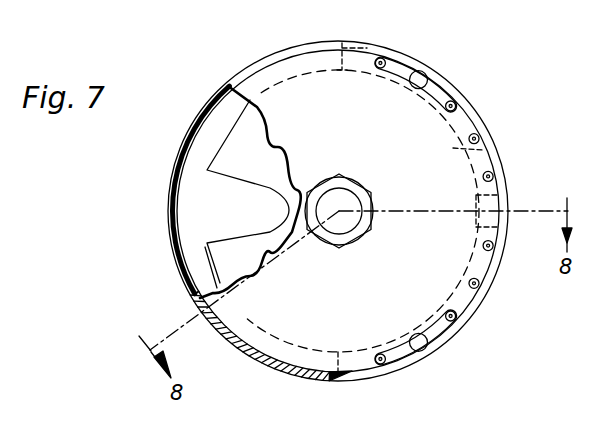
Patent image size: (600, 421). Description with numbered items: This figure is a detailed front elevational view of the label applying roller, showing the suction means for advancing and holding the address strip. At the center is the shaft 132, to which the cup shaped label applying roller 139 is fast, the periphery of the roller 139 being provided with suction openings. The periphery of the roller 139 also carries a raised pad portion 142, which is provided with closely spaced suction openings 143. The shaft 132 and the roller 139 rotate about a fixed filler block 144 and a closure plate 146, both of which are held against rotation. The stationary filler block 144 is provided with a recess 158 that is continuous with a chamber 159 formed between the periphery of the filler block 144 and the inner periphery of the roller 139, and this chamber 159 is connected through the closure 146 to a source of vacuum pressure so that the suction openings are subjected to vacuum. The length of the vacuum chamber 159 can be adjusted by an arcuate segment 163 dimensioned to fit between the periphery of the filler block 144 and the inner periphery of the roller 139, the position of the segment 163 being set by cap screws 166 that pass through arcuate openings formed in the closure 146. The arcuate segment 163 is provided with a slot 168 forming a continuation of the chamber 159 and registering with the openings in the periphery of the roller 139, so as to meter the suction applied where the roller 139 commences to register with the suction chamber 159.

The shaft 132 is at (342, 188).
The label applying roller 139 is at (462, 91).
The raised pad portion 142 is at (298, 375).
The suction openings 143 is at (199, 322).
The filler block 144 is at (196, 262).
The closure plate 146 is at (306, 84).
The recess 158 is at (245, 183).
The chamber 159 is at (222, 105).
The arcuate segment 163 is at (493, 170).
The cap screws 166 is at (430, 72).
The slot 168 is at (355, 43).